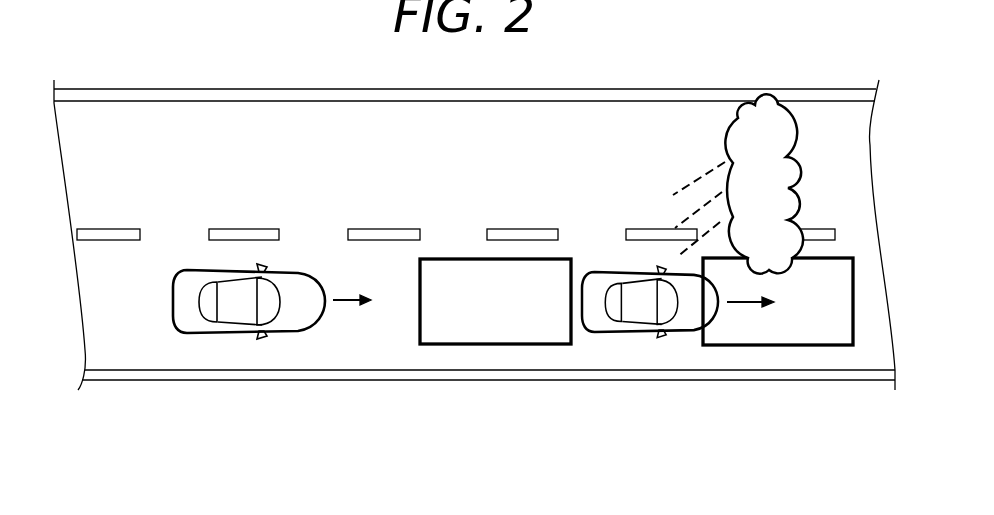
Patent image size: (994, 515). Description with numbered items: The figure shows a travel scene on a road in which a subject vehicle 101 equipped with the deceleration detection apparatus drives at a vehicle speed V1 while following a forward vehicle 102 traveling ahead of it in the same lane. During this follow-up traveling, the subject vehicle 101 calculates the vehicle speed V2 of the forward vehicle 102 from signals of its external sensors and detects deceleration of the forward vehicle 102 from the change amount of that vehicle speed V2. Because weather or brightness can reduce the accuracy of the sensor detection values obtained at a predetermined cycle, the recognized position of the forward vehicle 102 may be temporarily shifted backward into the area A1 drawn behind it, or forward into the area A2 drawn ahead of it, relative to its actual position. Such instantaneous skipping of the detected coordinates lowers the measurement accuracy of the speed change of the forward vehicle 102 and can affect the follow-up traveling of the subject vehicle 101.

The subject vehicle 101 is at (237, 333).
The forward vehicle 102 is at (635, 330).
The area A1 is at (522, 345).
The area A2 is at (762, 346).
The vehicle speed V1 is at (352, 315).
The vehicle speed V2 is at (750, 316).